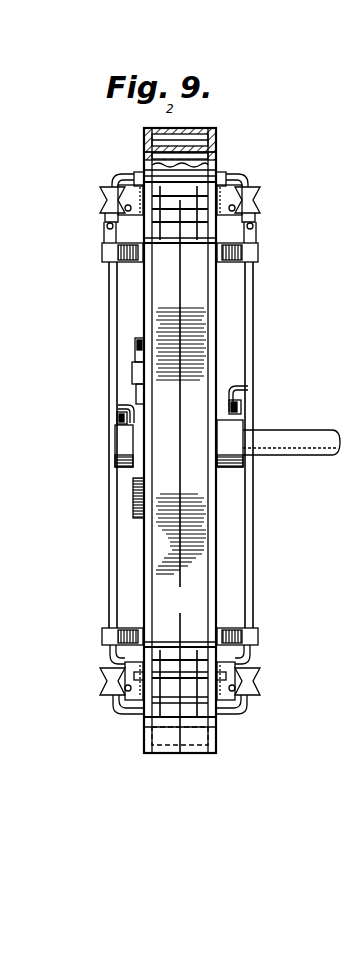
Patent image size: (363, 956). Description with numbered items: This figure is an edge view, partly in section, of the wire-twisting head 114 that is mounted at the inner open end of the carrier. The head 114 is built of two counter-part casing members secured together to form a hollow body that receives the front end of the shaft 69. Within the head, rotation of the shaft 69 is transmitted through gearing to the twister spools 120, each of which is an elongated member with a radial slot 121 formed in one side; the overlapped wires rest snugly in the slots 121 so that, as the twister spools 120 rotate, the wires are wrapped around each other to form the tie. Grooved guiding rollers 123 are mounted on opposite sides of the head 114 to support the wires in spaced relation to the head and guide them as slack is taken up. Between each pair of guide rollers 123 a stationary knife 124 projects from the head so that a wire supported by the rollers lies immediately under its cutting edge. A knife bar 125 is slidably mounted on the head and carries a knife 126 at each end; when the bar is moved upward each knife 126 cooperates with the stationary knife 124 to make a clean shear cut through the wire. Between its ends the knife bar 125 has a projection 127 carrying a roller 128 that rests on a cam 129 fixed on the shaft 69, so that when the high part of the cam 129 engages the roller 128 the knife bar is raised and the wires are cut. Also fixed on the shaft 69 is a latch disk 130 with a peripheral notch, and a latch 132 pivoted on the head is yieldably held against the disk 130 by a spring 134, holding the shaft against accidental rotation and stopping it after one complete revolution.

The shaft 69 is at (293, 440).
The head 114 is at (180, 440).
The twister spool 120 is at (198, 246).
The radial slot 121 is at (160, 246).
The grooved guiding roller 123 is at (108, 190).
The stationary knife 124 is at (140, 184).
The knife bar 125 is at (110, 304).
The knife 126 is at (99, 210).
The projection 127 is at (117, 406).
The roller 128 is at (116, 417).
The cam 129 is at (125, 442).
The latch disk 130 is at (132, 506).
The latch 132 is at (137, 366).
The spring 134 is at (137, 350).